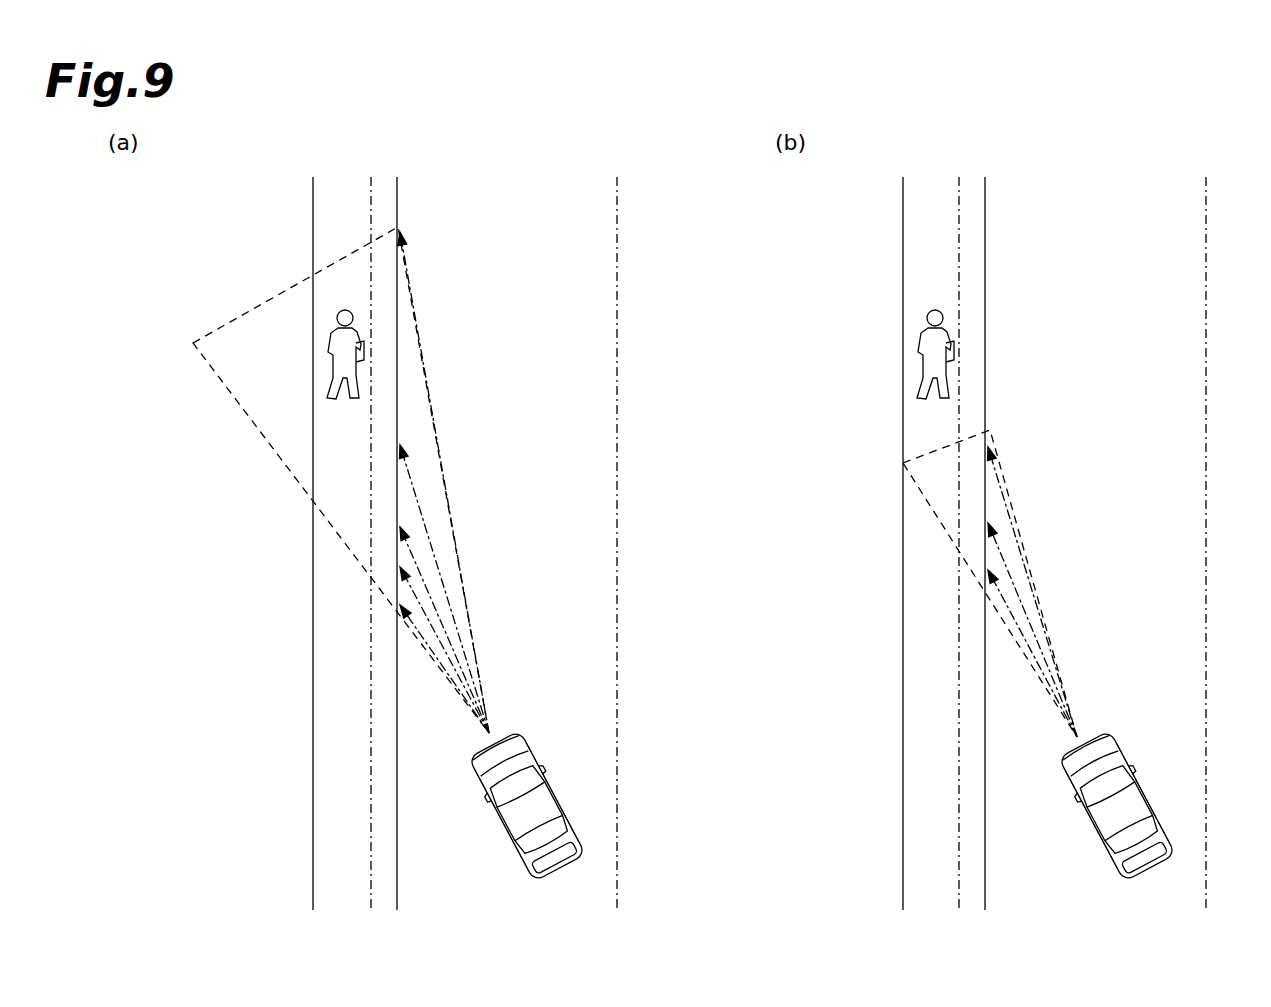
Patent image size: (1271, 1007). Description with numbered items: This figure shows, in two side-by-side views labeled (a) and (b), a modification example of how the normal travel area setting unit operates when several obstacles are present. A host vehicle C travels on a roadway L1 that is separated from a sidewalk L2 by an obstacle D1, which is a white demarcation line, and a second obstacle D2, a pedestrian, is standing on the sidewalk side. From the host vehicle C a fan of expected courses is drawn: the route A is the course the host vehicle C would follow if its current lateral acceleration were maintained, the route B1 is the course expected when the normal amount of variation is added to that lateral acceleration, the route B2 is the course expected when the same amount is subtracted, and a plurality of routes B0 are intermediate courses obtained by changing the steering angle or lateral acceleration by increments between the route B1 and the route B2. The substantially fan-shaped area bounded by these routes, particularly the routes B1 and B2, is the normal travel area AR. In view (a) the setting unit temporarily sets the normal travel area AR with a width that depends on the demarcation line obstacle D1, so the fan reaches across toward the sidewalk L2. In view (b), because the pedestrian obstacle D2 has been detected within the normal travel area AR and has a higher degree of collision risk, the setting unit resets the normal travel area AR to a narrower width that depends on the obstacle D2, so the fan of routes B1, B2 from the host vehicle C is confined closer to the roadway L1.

The roadway L1 is at (600, 676).
The sidewalk L2 is at (330, 778).
The obstacle (demarcation line) D1 is at (378, 860).
The obstacle (pedestrian) D2 is at (333, 368).
The normal travel area AR is at (425, 338).
The route A is at (455, 645).
The routes B0 is at (446, 586).
The route B1 is at (450, 498).
The route B2 is at (460, 704).
The host vehicle C is at (510, 838).